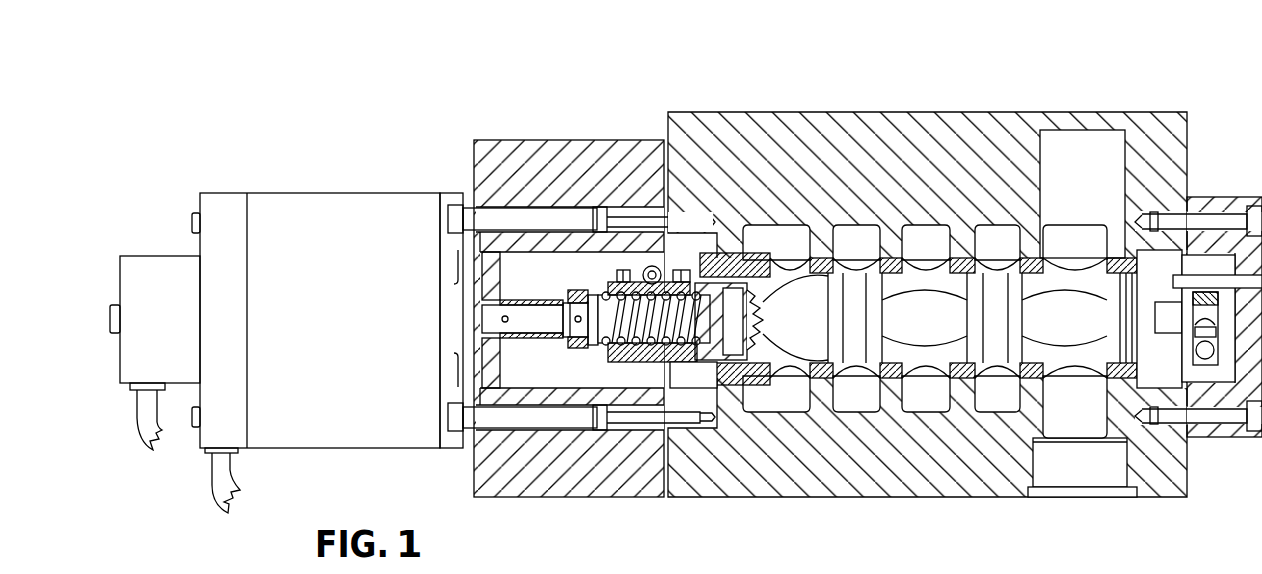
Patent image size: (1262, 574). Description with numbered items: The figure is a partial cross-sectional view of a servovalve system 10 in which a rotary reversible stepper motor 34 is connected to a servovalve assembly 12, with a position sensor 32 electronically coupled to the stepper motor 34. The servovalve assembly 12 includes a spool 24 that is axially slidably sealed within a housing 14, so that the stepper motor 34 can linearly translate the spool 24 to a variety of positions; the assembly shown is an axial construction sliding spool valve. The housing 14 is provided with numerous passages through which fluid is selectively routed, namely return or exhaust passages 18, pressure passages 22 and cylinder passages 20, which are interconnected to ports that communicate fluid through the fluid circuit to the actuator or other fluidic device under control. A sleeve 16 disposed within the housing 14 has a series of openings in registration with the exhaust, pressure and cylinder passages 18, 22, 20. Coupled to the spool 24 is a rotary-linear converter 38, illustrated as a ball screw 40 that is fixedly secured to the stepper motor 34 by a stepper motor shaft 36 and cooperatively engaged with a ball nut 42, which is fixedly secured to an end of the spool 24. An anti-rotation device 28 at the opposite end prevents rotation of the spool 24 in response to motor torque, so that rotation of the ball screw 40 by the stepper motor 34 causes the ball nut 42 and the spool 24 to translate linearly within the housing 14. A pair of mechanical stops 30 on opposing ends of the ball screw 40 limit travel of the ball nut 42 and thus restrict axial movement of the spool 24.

The servovalve system 10 is at (284, 74).
The servovalve assembly 12 is at (481, 72).
The housing 14 is at (946, 130).
The sleeve 16 is at (1058, 263).
The exhaust passages 18 is at (793, 303).
The cylinder passages 20 is at (860, 400).
The pressure passages 22 is at (930, 400).
The spool 24 is at (1100, 300).
The anti-rotation device 28 is at (1207, 365).
The mechanical stops 30 is at (593, 278).
The position sensor 32 is at (147, 265).
The stepper motor 34 is at (305, 216).
The stepper motor shaft 36 is at (532, 316).
The rotary-linear converter 38 is at (597, 333).
The ball screw 40 is at (658, 362).
The ball nut 42 is at (626, 360).